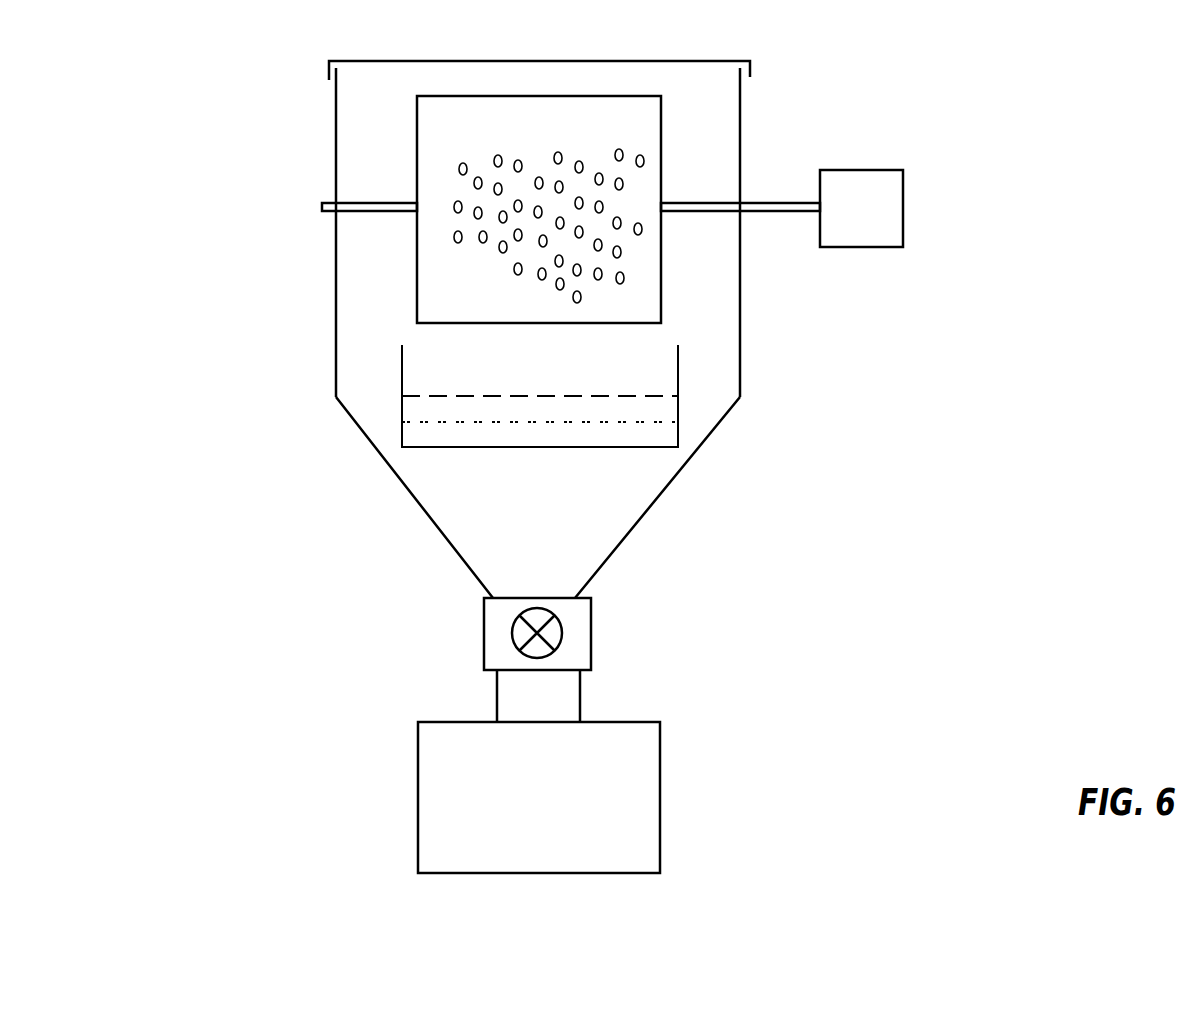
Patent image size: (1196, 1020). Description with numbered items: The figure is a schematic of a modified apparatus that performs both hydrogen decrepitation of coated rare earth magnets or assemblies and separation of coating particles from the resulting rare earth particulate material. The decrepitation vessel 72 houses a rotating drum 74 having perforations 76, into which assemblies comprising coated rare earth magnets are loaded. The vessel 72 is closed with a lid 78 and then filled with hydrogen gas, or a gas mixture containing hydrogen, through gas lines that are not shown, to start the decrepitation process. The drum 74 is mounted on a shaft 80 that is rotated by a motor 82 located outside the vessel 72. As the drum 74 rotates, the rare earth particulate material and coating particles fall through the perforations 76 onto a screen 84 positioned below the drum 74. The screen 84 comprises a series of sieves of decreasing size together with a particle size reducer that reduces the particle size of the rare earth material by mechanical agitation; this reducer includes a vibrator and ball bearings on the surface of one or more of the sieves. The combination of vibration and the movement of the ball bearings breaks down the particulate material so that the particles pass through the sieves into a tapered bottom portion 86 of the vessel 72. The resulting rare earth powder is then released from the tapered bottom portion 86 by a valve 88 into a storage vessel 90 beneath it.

The decrepitation vessel 72 is at (325, 264).
The rotating drum 74 is at (653, 140).
The perforations 76 is at (640, 289).
The lid 78 is at (320, 63).
The shaft 80 is at (312, 198).
The motor 82 is at (868, 259).
The screen 84 is at (389, 382).
The tapered bottom portion 86 is at (406, 501).
The valve 88 is at (471, 628).
The storage vessel 90 is at (406, 791).